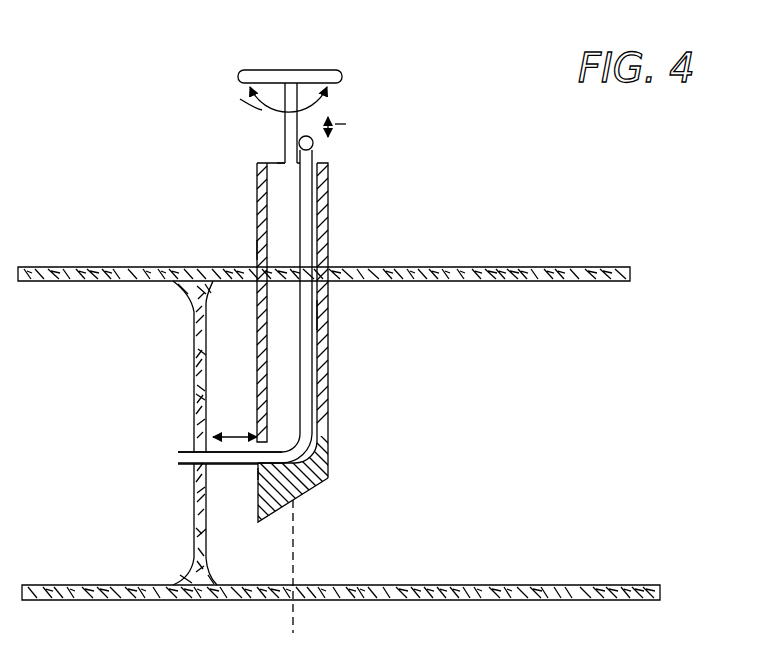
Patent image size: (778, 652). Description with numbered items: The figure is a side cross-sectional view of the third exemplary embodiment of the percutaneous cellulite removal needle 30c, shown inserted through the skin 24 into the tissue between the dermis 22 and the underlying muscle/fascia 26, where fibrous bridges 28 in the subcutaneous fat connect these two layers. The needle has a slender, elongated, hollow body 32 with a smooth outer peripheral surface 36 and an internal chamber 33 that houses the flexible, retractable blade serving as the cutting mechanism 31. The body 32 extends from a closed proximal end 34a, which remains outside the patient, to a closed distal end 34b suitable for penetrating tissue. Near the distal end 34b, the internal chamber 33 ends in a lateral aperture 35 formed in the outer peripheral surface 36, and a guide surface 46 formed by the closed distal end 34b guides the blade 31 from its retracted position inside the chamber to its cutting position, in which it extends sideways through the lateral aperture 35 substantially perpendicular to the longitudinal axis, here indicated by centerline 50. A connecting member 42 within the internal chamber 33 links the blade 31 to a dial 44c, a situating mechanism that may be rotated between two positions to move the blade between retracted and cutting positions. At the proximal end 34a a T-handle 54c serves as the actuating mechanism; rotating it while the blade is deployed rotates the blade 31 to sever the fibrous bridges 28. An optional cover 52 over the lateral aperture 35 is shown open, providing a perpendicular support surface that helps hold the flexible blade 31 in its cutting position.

The dermis 22 is at (536, 267).
The muscle/fascia 26 is at (550, 598).
The fibrous bridges 28 is at (190, 326).
The cutting mechanism 31 is at (176, 460).
The T-handle 54c is at (262, 70).
The proximal end 34a is at (290, 70).
The internal chamber 33 is at (276, 215).
The outer peripheral surface 36 is at (257, 249).
The body 32 is at (328, 223).
The connecting member 42 is at (318, 316).
The dial 44c is at (314, 147).
The distal end 34b is at (262, 522).
The cover 52 is at (256, 469).
The guide surface 46 is at (278, 162).
The lateral aperture 35 is at (251, 449).
The centerline 50 is at (294, 614).
The percutaneous cellulite removal needle 30c is at (408, 230).
The skin 24 is at (562, 450).